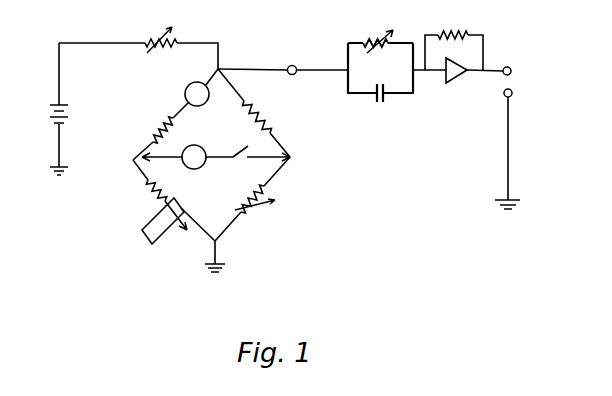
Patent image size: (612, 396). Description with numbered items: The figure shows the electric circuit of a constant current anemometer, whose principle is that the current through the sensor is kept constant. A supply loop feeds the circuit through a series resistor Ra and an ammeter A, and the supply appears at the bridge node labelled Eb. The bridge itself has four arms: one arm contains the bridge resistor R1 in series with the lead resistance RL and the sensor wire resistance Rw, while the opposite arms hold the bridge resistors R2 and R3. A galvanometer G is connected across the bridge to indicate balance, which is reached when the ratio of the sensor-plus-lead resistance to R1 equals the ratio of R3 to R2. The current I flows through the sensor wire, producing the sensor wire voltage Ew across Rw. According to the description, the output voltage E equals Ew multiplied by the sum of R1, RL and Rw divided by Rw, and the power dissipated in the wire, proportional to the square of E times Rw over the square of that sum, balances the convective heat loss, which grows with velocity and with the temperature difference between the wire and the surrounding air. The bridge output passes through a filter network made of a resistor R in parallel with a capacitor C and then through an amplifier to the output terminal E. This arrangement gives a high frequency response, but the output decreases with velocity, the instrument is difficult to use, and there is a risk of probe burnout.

The adjustable series resistor Ra is at (161, 35).
The bridge supply voltage terminal Eb is at (291, 61).
The ammeter A is at (201, 87).
The galvanometer G is at (216, 157).
The bridge resistor R1 is at (161, 132).
The bridge resistor R2 is at (254, 113).
The bridge resistor R3 is at (252, 199).
The lead resistance RL is at (155, 180).
The sensor wire resistance Rw is at (170, 230).
The sensor wire voltage Ew is at (185, 192).
The wire current I is at (176, 225).
The filter resistor R is at (380, 36).
The filter capacitor C is at (380, 85).
The output voltage E is at (510, 138).